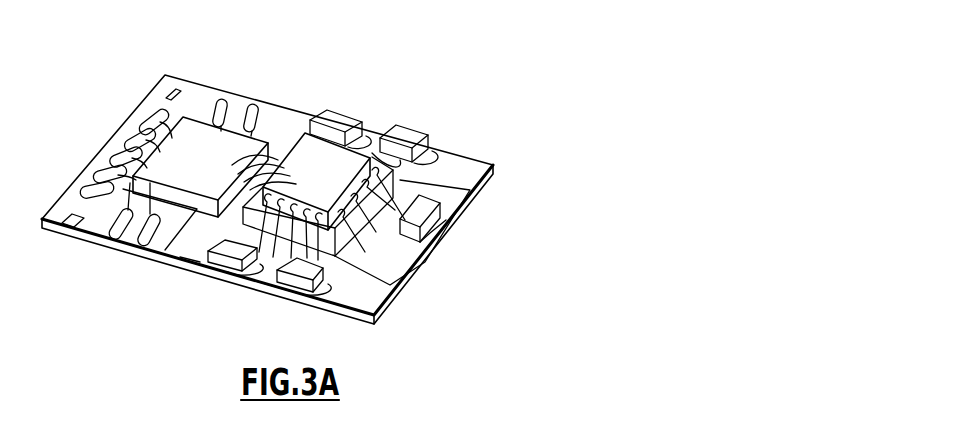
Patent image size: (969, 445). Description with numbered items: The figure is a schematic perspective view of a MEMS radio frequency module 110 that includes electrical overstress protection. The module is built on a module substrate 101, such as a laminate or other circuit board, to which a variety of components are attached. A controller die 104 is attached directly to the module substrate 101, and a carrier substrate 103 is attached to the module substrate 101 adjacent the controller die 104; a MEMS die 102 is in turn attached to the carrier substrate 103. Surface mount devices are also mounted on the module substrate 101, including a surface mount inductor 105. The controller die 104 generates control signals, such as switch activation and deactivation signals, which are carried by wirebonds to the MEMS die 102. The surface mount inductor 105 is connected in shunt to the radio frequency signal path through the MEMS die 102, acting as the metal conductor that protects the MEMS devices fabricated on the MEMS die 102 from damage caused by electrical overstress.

The module substrate 101 is at (488, 176).
The MEMS die 102 is at (316, 152).
The carrier substrate 103 is at (377, 160).
The controller die 104 is at (197, 127).
The surface mount inductor 105 is at (296, 276).
The MEMS radio frequency module 110 is at (618, 37).